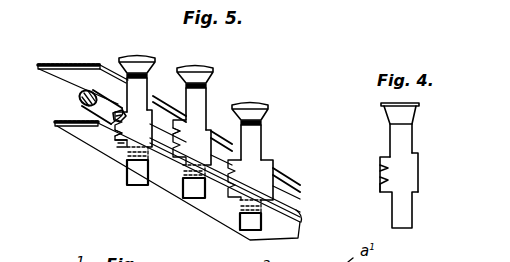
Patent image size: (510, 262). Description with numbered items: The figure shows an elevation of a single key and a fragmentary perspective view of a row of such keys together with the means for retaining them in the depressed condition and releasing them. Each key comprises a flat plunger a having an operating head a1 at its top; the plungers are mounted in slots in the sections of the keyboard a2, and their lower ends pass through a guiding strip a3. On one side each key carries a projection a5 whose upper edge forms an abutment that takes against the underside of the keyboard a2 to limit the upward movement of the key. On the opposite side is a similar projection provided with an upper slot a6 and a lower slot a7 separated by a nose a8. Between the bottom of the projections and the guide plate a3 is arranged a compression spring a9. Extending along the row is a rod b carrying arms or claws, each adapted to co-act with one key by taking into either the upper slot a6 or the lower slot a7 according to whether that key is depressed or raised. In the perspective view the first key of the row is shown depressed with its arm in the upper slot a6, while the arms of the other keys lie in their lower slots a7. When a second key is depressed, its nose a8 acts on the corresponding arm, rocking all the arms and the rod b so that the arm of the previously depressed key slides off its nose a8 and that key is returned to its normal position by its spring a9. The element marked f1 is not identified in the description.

In FIG. 5, the flat plunger a is at (194, 100).
In FIG. 4, the flat plunger a is at (390, 136).
In FIG. 5, the operating head a1 is at (141, 56).
In FIG. 4, the operating head a1 is at (419, 105).
In FIG. 5, the keyboard a2 is at (84, 64).
In FIG. 5, the guiding strip a3 is at (80, 131).
In FIG. 5, the projection a5 is at (215, 137).
In FIG. 4, the projection a5 is at (419, 170).
In FIG. 5, the upper slot a6 is at (157, 99).
In FIG. 4, the upper slot a6 is at (386, 165).
In FIG. 4, the lower slot a7 is at (387, 188).
In FIG. 5, the nose a8 is at (107, 143).
In FIG. 4, the nose a8 is at (385, 179).
In FIG. 5, the compression spring a9 is at (125, 167).
In FIG. 5, the rod b is at (79, 96).
In FIG. 5, the clip f1 is at (110, 108).